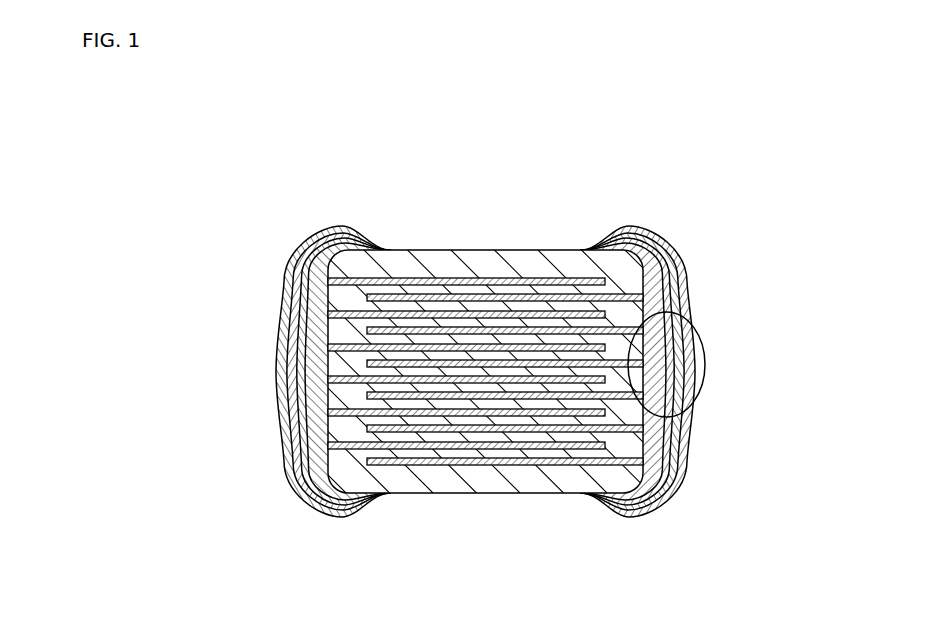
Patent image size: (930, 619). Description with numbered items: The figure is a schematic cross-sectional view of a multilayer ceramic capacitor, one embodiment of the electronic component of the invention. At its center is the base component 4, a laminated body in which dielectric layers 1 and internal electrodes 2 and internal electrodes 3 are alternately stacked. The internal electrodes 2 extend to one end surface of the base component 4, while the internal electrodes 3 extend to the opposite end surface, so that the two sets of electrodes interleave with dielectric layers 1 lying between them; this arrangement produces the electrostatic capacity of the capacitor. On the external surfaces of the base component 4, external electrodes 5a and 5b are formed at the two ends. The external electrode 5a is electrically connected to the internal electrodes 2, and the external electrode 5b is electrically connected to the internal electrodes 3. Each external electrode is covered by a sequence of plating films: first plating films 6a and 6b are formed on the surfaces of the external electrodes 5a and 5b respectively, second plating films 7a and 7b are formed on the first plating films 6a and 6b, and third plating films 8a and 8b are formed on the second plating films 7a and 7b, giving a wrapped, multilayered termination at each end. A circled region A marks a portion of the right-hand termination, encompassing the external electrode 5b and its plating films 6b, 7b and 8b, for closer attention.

The dielectric layer 1 is at (496, 256).
The internal electrode 2 is at (450, 276).
The internal electrode 3 is at (473, 294).
The base component 4 is at (485, 308).
The external electrode 5a is at (360, 246).
The external electrode 5b is at (590, 247).
The first plating film 6a is at (340, 237).
The first plating film 6b is at (662, 256).
The second plating film 7a is at (305, 243).
The second plating film 7b is at (685, 274).
The third plating film 8a is at (281, 318).
The third plating film 8b is at (690, 305).
The enlarged region A is at (704, 360).